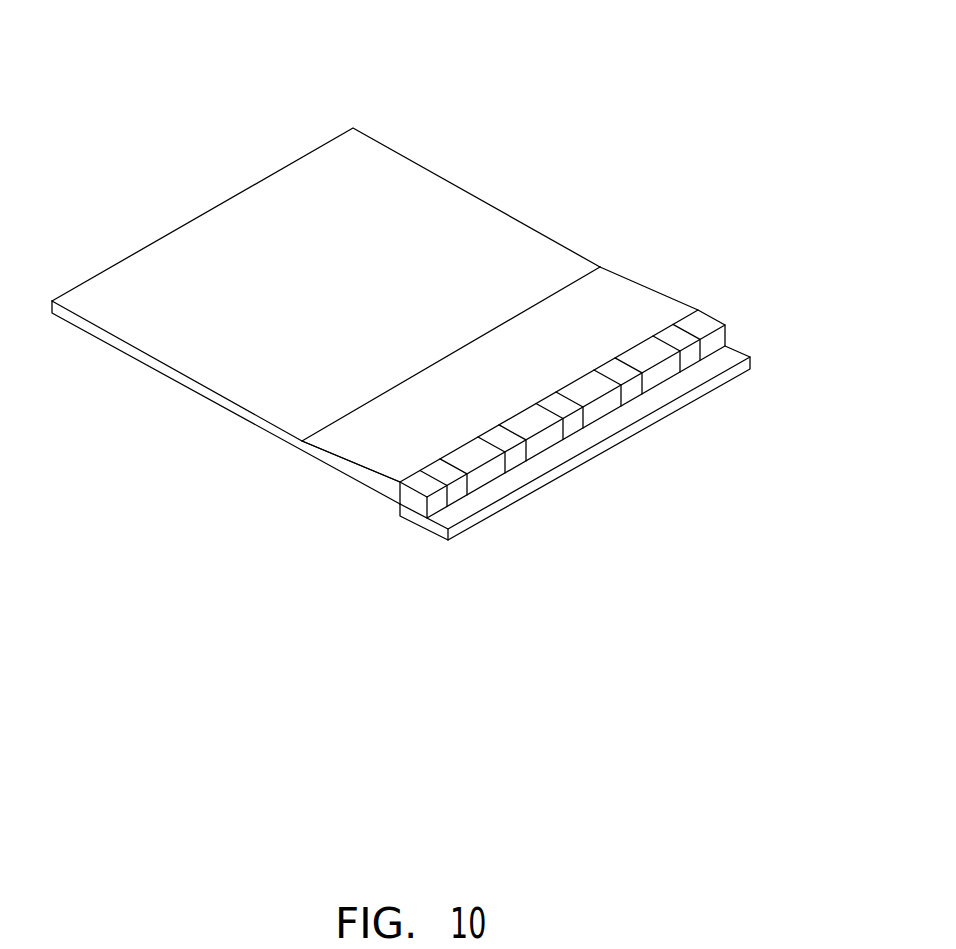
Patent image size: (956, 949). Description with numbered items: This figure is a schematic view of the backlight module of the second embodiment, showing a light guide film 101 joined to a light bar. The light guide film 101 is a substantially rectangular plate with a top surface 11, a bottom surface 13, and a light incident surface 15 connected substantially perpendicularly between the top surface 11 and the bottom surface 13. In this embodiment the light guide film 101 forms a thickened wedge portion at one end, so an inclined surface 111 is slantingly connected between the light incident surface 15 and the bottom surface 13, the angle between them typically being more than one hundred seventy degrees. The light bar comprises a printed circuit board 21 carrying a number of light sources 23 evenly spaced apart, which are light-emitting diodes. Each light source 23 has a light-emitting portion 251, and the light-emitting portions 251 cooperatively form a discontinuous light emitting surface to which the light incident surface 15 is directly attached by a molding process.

The light guide film 101 is at (401, 191).
The top surface 11 is at (326, 316).
The bottom surface 13 is at (326, 284).
The inclined surface 111 is at (512, 362).
The light incident surface 15 is at (431, 518).
The printed circuit board 21 is at (572, 467).
The light source 23 is at (628, 379).
The light-emitting portion 251 is at (507, 428).